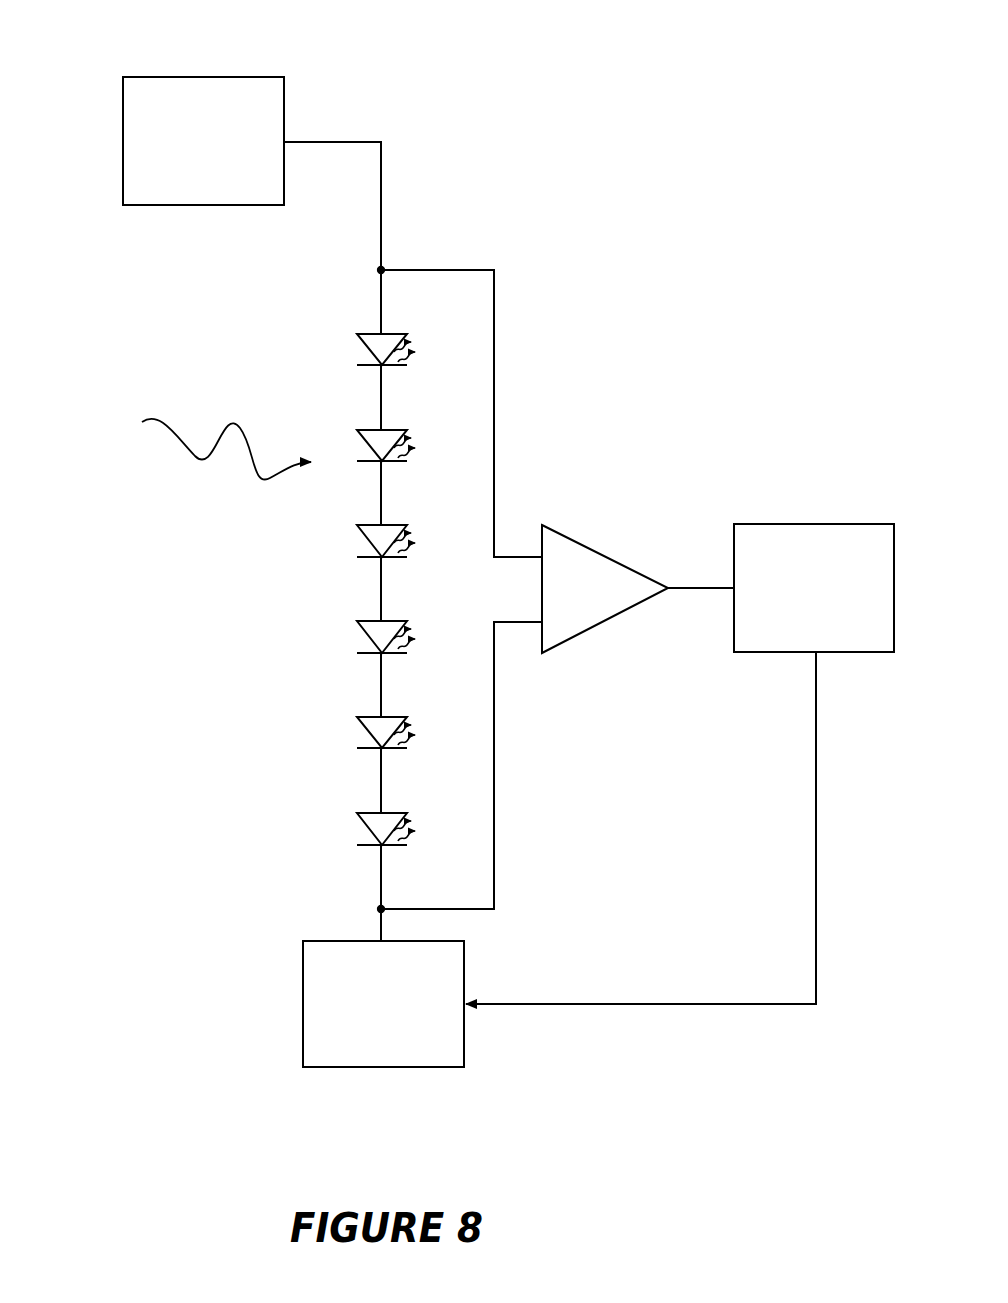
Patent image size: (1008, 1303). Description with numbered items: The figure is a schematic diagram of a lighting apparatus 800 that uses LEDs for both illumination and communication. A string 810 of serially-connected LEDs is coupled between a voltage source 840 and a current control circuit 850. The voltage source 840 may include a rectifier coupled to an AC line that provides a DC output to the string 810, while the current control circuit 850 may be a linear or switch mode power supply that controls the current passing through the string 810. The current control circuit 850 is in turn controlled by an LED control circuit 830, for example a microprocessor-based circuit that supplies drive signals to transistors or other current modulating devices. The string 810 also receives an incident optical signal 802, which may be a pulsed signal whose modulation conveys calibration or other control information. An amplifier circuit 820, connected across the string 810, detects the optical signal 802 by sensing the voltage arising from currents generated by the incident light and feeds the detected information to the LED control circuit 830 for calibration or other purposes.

The lighting apparatus 800 is at (563, 85).
The optical signal 802 is at (214, 497).
The string of serially-connected LEDs 810 is at (348, 300).
The amplifier circuit 820 is at (573, 534).
The LED control circuit 830 is at (814, 524).
The voltage source 840 is at (205, 77).
The current control circuit 850 is at (384, 1067).